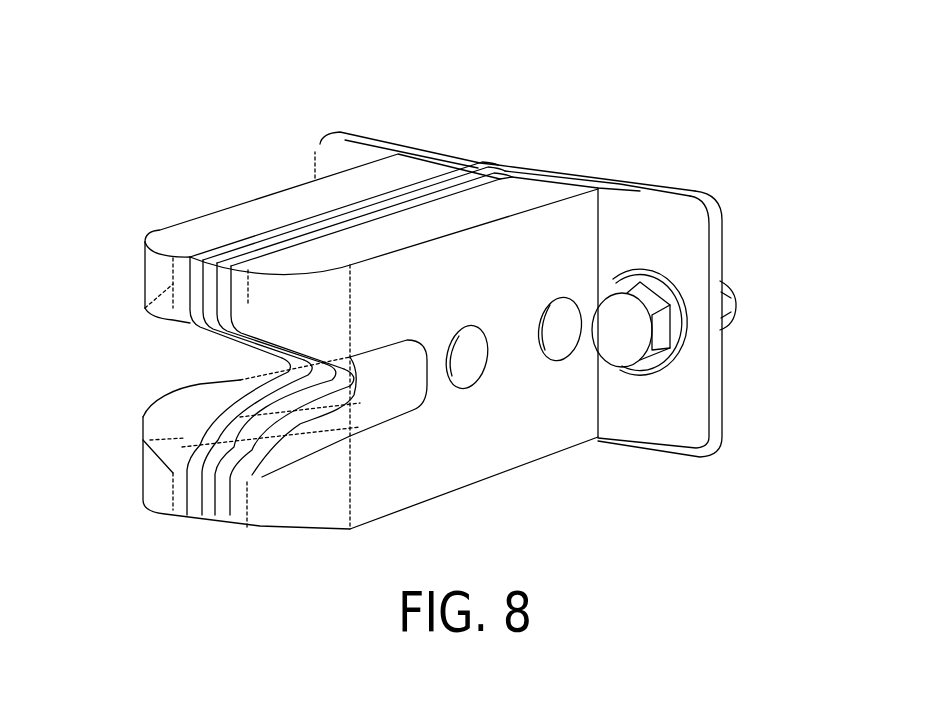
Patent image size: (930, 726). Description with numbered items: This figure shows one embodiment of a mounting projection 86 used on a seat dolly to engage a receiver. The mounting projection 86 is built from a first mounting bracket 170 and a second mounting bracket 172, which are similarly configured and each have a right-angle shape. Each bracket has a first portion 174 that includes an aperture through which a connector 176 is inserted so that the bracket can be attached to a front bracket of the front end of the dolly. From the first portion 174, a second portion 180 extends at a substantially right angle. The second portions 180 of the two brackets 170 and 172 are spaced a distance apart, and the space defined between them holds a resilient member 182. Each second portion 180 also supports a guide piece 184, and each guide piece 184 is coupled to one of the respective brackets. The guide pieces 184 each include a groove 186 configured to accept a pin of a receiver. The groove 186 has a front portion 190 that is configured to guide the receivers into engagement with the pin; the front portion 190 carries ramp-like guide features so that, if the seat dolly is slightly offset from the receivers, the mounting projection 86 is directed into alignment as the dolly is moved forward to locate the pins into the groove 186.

The mounting projection 86 is at (623, 103).
The first mounting bracket 170 is at (671, 428).
The second mounting bracket 172 is at (320, 153).
The first portion 174 is at (677, 233).
The connector 176 is at (660, 333).
The second portion 180 is at (436, 180).
The resilient member 182 is at (208, 280).
The guide piece 184 is at (177, 236).
The groove 186 is at (233, 358).
The front portion 190 is at (141, 512).